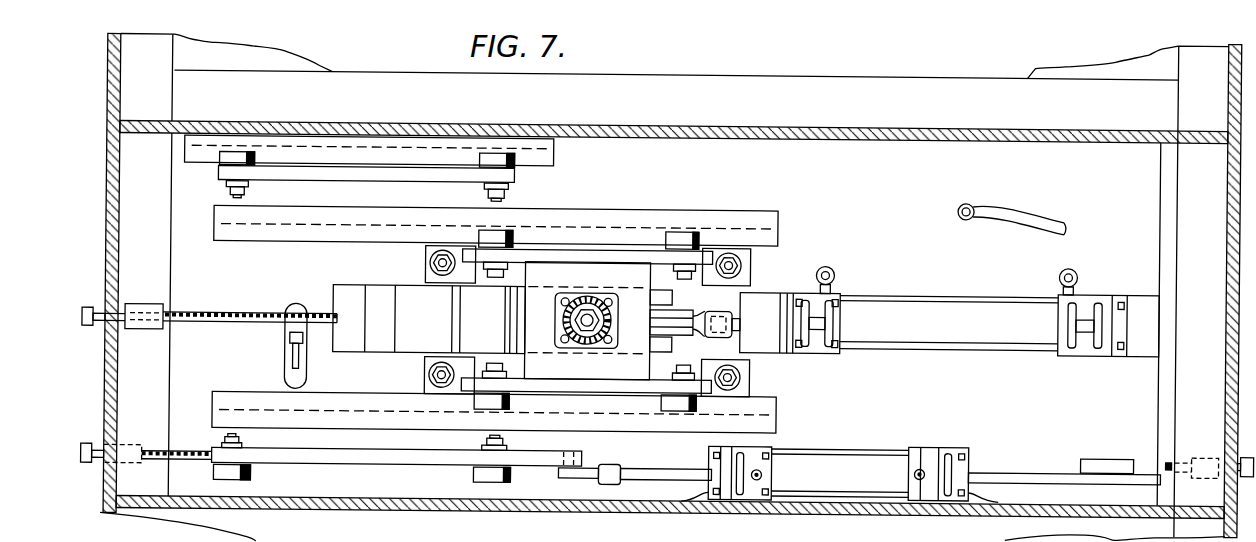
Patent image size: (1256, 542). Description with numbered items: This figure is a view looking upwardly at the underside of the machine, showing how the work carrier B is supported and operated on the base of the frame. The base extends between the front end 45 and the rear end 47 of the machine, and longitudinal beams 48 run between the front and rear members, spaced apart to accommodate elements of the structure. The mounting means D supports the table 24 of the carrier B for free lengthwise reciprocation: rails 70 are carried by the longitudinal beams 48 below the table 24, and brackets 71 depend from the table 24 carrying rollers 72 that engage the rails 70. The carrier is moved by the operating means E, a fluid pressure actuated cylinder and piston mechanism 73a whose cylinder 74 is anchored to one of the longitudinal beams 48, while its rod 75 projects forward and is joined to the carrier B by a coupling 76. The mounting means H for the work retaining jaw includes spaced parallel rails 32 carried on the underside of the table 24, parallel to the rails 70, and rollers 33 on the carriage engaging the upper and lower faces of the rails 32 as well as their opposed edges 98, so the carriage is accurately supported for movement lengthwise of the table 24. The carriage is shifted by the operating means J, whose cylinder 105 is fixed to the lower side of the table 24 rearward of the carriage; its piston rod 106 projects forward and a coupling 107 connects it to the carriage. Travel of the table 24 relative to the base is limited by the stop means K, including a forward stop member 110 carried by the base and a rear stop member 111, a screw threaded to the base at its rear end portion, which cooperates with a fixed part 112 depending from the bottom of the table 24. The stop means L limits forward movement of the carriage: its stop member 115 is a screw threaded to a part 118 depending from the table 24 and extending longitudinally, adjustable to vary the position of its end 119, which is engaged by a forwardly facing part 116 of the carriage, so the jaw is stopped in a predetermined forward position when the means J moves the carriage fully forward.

The front end 45 is at (120, 206).
The rear end 47 is at (1225, 278).
The longitudinal beams 48 is at (873, 515).
The table 24 is at (673, 160).
The rails 70 is at (393, 143).
The brackets 71 is at (286, 179).
The rollers 72 is at (237, 154).
The rails 32 is at (617, 212).
The rollers 33 is at (503, 233).
The opposed edges 98 is at (340, 246).
The cylinder 105 is at (949, 323).
The piston rod 106 is at (763, 316).
The coupling 107 is at (712, 293).
The forward stop member 110 is at (207, 452).
The stop member 111 is at (1167, 457).
The fixed part 112 is at (1100, 454).
The stop member 115 is at (236, 317).
The forwardly facing part 116 is at (521, 323).
The part 118 is at (143, 338).
The end 119 is at (345, 353).
The cylinder and piston mechanism 73a is at (812, 463).
The cylinder 74 is at (839, 481).
The rod 75 is at (674, 466).
The coupling 76 is at (592, 468).
The mounting means D is at (493, 150).
The mounting means H is at (696, 210).
The operating means J is at (896, 293).
The stop means L is at (183, 308).
The work carrier B is at (262, 346).
The stop means K is at (176, 446).
The operating means E is at (858, 467).